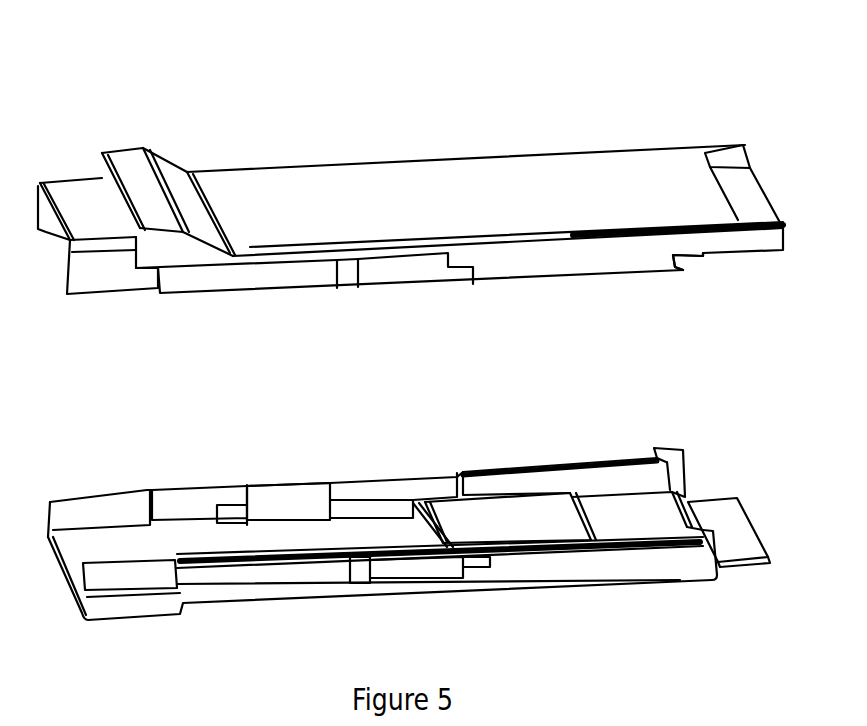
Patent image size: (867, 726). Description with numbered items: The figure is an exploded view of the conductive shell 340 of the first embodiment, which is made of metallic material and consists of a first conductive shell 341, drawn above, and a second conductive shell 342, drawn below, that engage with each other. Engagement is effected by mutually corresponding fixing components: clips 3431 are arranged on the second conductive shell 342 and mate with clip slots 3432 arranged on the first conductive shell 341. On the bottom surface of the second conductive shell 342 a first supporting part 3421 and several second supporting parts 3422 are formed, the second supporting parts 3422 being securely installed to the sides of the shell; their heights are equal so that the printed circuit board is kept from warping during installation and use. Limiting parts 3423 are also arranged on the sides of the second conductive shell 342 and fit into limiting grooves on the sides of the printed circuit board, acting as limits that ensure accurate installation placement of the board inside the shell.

The conductive shell 340 is at (281, 63).
The first conductive shell 341 is at (483, 175).
The second conductive shell 342 is at (565, 560).
The first supporting part 3421 is at (520, 510).
The second supporting parts 3422 is at (374, 510).
The limiting parts 3423 is at (280, 490).
The clips 3431 is at (667, 447).
The clip slots 3432 is at (690, 265).